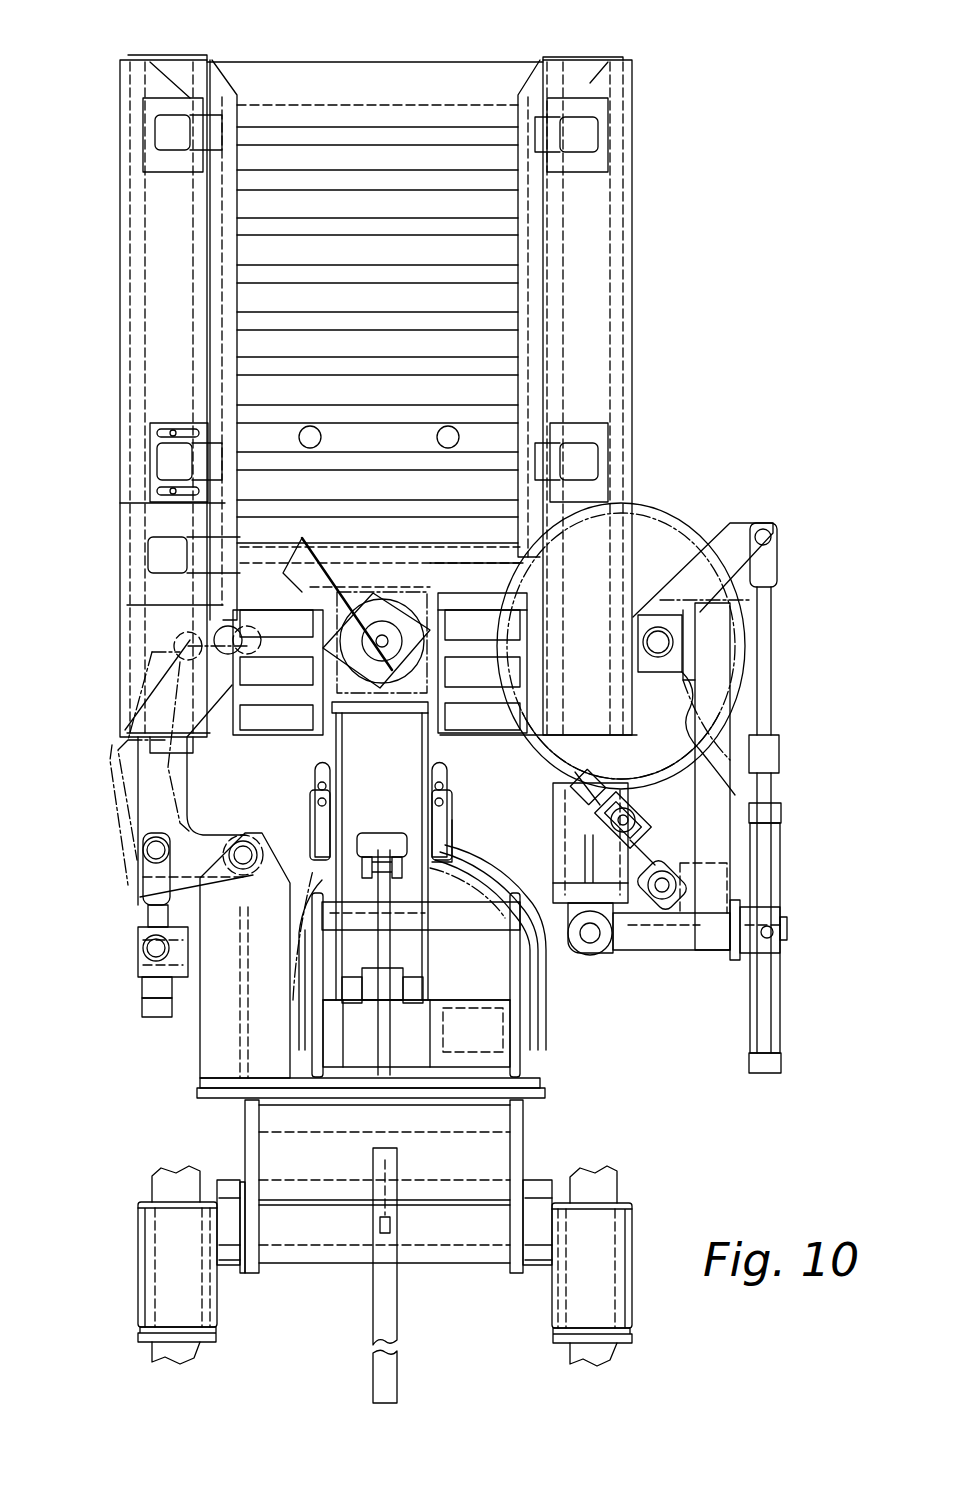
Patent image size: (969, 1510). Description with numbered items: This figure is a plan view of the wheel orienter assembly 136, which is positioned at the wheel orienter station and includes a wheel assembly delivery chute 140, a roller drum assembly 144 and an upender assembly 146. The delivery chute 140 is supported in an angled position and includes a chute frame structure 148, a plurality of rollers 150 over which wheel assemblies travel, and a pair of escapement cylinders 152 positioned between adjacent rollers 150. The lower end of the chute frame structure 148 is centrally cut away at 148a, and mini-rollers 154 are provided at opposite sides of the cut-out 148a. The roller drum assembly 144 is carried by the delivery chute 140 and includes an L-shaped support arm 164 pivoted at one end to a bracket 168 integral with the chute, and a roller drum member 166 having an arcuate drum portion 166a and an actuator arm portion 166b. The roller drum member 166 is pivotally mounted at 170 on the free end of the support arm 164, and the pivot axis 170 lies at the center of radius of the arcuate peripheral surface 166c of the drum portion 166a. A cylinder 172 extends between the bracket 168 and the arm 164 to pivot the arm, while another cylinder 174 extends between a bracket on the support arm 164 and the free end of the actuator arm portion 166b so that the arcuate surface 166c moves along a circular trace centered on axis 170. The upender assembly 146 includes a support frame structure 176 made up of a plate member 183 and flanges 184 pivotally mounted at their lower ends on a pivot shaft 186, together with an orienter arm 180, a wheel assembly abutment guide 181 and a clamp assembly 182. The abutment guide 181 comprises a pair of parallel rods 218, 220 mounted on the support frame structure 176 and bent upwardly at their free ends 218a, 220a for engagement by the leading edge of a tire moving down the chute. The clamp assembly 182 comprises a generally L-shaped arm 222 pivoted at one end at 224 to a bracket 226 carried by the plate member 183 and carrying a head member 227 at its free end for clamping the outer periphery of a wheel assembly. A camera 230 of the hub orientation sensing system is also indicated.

The wheel orienter assembly 136 is at (692, 343).
The wheel assembly delivery chute 140 is at (355, 80).
The roller drum assembly 144 is at (692, 500).
The upender assembly 146 is at (575, 1042).
The chute frame structure 148 is at (634, 210).
The cut-out 148a is at (436, 605).
The rollers 150 is at (402, 190).
The escapement cylinders 152 is at (437, 430).
The mini-rollers 154 is at (275, 720).
The support arm 164 is at (668, 942).
The roller drum member 166 is at (700, 686).
The arcuate drum portion 166a is at (548, 733).
The actuator arm portion 166b is at (668, 590).
The arcuate peripheral surface 166c is at (648, 790).
The bracket 168 is at (553, 842).
The pivot axis 170 is at (660, 627).
The cylinder 172 is at (632, 816).
The cylinder 174 is at (786, 856).
The support frame structure 176 is at (790, 922).
The orienter arm 180 is at (372, 753).
The wheel assembly abutment guide 181 is at (455, 826).
The clamp assembly 182 is at (115, 745).
The plate member 183 is at (530, 1100).
The flanges 184 is at (243, 1158).
The pivot shaft 186 is at (360, 1240).
The rod 218 is at (310, 860).
The free end 218a is at (318, 796).
The rod 220 is at (488, 856).
The free end 220a is at (430, 808).
The arm 222 is at (152, 712).
The pivot 224 is at (243, 843).
The bracket 226 is at (200, 1062).
The head member 227 is at (214, 640).
The camera 230 is at (136, 986).